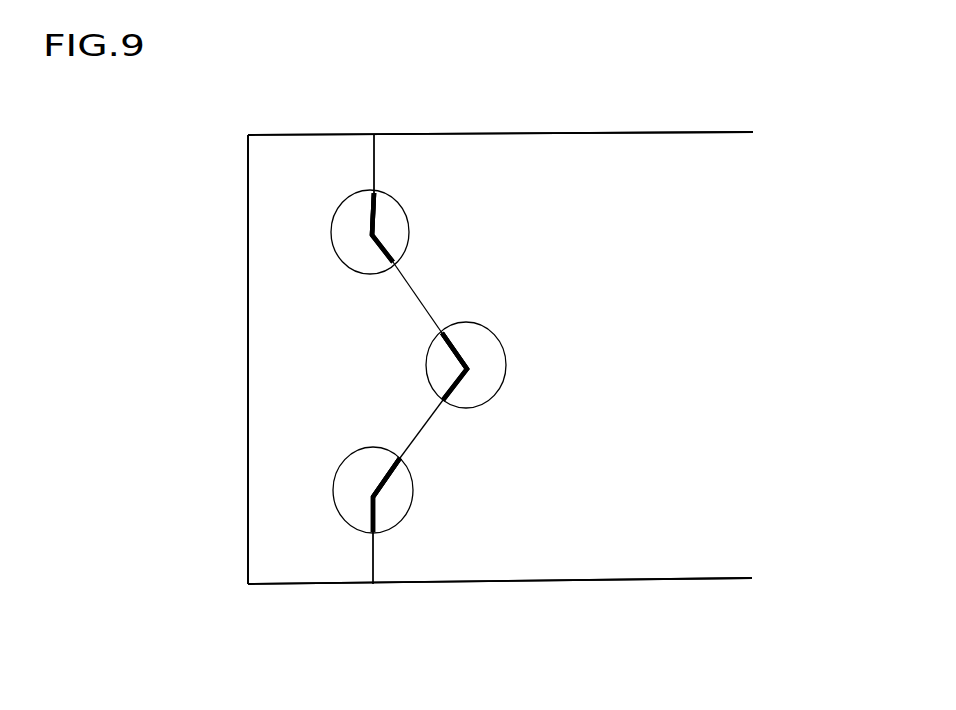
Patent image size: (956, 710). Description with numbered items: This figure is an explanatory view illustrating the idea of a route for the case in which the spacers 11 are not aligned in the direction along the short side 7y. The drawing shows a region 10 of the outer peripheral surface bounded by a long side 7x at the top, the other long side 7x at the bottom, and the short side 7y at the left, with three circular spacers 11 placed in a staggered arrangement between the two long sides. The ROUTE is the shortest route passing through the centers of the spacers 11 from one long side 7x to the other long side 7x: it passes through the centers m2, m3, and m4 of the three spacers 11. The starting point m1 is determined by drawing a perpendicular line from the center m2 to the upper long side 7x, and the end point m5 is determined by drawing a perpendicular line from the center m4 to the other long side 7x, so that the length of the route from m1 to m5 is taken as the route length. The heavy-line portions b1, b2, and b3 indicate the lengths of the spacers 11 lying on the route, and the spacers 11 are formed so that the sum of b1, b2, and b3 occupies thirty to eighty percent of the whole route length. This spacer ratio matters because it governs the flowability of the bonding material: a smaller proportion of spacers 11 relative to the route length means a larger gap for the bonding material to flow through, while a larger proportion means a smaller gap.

The travel area / field 10 is at (703, 112).
The spacer 11 is at (357, 197).
The long side 7x is at (532, 133).
The short side 7y is at (248, 372).
The route ROUTE is at (430, 423).
The heavy-line portion b1 is at (375, 209).
The heavy-line portion b2 is at (452, 352).
The heavy-line portion b3 is at (387, 479).
The route start point m1 is at (378, 148).
The spacer center m2 is at (357, 220).
The spacer center m3 is at (474, 357).
The spacer center m4 is at (369, 481).
The route end point m5 is at (382, 573).